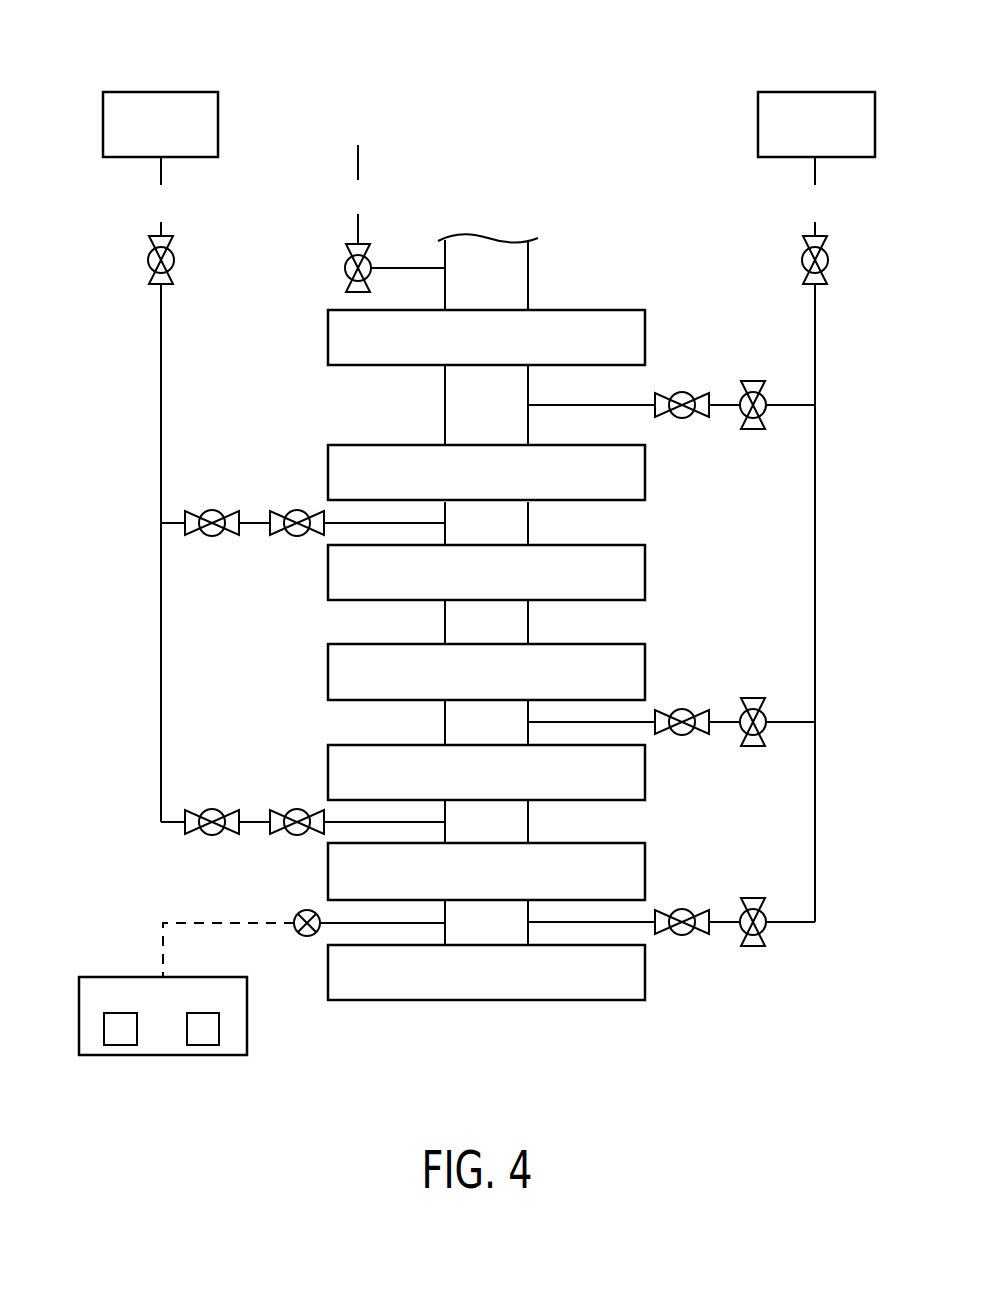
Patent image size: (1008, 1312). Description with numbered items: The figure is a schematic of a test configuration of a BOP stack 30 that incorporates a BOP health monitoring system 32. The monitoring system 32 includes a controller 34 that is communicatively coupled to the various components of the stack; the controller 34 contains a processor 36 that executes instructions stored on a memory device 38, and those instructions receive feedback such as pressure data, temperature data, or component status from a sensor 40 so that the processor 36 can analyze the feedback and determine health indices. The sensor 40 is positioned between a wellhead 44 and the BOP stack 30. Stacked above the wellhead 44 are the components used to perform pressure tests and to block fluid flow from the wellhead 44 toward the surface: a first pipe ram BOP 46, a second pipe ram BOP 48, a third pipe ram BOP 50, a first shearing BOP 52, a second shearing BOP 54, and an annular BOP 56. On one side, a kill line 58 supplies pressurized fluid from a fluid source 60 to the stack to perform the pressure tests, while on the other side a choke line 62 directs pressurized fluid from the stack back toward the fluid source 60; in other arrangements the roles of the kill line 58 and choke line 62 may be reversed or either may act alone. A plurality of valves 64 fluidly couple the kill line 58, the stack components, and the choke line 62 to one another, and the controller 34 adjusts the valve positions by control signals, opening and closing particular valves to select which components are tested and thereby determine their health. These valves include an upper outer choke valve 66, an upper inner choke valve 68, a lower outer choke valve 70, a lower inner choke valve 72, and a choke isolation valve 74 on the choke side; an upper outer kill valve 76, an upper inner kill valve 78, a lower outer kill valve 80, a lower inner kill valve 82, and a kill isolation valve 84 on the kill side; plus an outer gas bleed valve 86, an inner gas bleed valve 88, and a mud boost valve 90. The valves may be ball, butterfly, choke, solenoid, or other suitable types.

The BOP stack 30 is at (118, 388).
The BOP health monitoring system 32 is at (243, 999).
The controller 34 is at (195, 1047).
The processor 36 is at (103, 1028).
The memory device 38 is at (219, 1028).
The sensor 40 is at (300, 911).
The wellhead 44 is at (562, 1000).
The first pipe ram BOP 46 is at (562, 843).
The second pipe ram BOP 48 is at (409, 745).
The third pipe ram BOP 50 is at (562, 644).
The first shearing BOP 52 is at (562, 545).
The second shearing BOP 54 is at (562, 445).
The annular BOP 56 is at (562, 310).
The kill line 58 is at (163, 335).
The fluid source 60 is at (158, 92).
The choke line 62 is at (815, 358).
The plurality of valves 64 is at (481, 576).
The upper outer choke (UOC) valve 66 is at (762, 740).
The upper inner choke (UIC) valve 68 is at (698, 735).
The lower outer choke (LOC) valve 70 is at (762, 938).
The lower inner choke (LIC) valve 72 is at (698, 935).
The choke isolation valve (CIV) 74 is at (827, 245).
The upper outer kill (UOK) valve 76 is at (213, 510).
The upper inner kill (UIK) valve 78 is at (300, 510).
The lower outer kill (LOK) valve 80 is at (213, 809).
The lower inner kill (LIK) valve 82 is at (300, 809).
The kill isolation valve (KIV) 84 is at (152, 278).
The outer gas bleed (OB) valve 86 is at (762, 418).
The inner gas bleed (IB) valve 88 is at (698, 418).
The mud boost valve (MBV) 90 is at (352, 283).